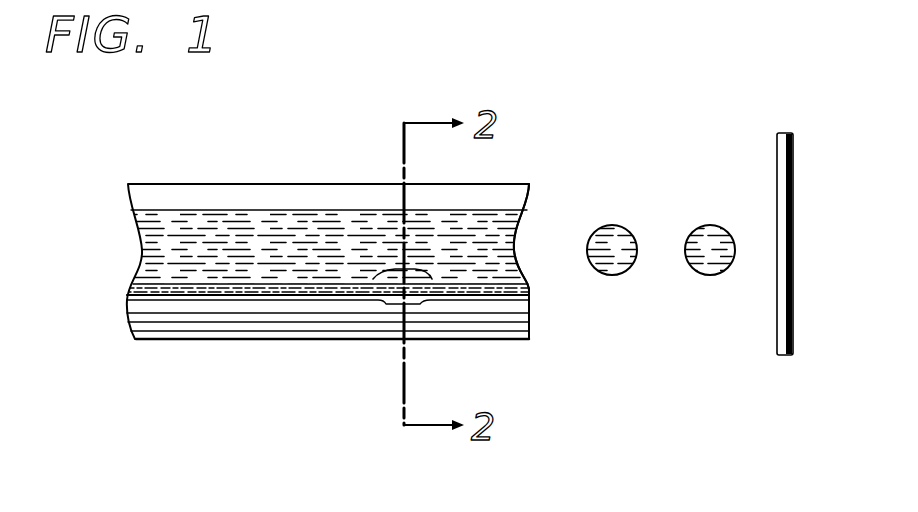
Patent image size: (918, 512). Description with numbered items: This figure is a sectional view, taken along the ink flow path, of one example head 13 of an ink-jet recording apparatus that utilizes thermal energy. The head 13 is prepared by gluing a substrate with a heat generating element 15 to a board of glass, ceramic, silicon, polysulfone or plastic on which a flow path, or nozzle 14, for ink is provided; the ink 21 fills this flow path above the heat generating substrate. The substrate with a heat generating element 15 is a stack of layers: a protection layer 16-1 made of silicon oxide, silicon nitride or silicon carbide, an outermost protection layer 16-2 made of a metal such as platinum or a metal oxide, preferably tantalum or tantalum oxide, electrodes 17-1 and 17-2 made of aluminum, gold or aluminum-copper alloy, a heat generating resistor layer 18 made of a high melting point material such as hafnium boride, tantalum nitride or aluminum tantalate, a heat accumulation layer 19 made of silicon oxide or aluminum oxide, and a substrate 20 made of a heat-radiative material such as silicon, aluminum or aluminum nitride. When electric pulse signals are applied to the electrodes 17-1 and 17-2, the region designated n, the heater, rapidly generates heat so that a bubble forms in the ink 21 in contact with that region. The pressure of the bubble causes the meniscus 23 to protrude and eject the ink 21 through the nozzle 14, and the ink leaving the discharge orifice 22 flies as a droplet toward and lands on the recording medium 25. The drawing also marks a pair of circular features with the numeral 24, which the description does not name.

The head 13 is at (215, 184).
The flow path (nozzle) 14 is at (267, 208).
The ink 21 is at (170, 222).
The heater region n is at (403, 268).
The outermost protection layer 16-2 is at (133, 285).
The substrate with heat generating element 15 is at (118, 287).
The protection layer 16-1 is at (163, 297).
The electrode 17-1 is at (210, 302).
The electrode 17-2 is at (488, 305).
The heat generating resistor layer 18 is at (257, 314).
The heat accumulation layer 19 is at (310, 323).
The substrate 20 is at (375, 331).
The discharge orifice 22 is at (536, 272).
The meniscus 23 is at (530, 233).
The ink supply ports 24 is at (577, 218).
The recording medium 25 is at (777, 168).